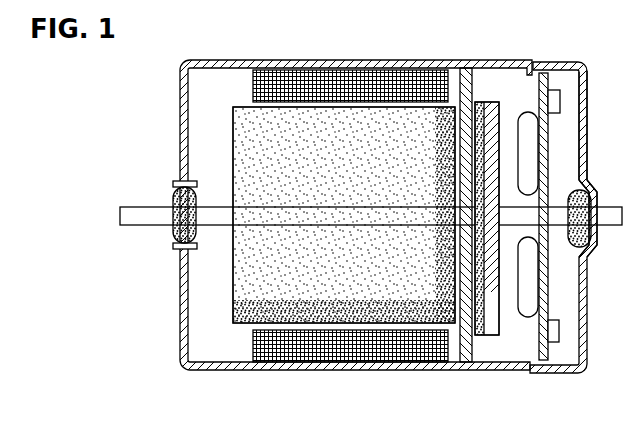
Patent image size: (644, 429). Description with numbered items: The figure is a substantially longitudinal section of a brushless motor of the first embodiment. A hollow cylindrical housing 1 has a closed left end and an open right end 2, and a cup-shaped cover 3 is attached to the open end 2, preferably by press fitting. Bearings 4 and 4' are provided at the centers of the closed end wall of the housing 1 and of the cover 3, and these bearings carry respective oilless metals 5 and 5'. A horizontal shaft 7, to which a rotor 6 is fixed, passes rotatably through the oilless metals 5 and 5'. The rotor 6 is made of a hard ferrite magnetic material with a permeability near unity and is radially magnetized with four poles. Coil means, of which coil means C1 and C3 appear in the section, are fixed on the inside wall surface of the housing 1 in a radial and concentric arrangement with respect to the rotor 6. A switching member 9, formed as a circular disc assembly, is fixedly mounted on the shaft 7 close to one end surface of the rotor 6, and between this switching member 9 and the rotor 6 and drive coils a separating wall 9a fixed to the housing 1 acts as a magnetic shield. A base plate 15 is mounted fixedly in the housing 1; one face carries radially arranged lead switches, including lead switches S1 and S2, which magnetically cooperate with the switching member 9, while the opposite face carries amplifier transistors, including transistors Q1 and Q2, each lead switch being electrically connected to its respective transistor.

The housing 1 is at (488, 61).
The open end 2 is at (528, 64).
The cover 3 is at (588, 100).
The bearing 4 is at (163, 224).
The oilless metal 5 is at (165, 204).
The rotor 6 is at (232, 137).
The shaft 7 is at (219, 210).
The switching member 9 is at (503, 333).
The separating wall 9a is at (462, 350).
The base plate 15 is at (548, 300).
The coil means C1 is at (296, 64).
The coil means C3 is at (286, 363).
The lead switch S1 is at (524, 121).
The lead switch S2 is at (537, 283).
The amplifier transistor Q1 is at (554, 114).
The amplifier transistor Q2 is at (559, 333).
The bearing 4' is at (599, 229).
The oilless metal 5' is at (597, 200).